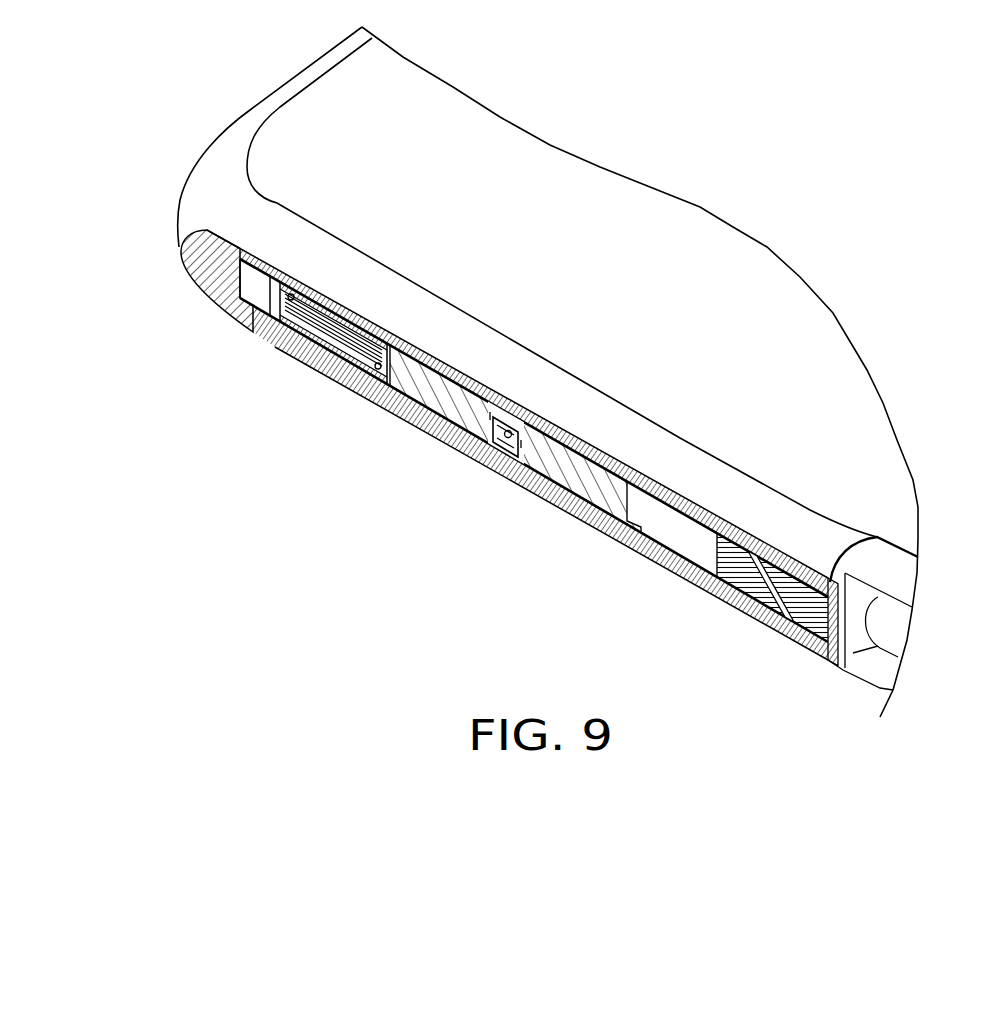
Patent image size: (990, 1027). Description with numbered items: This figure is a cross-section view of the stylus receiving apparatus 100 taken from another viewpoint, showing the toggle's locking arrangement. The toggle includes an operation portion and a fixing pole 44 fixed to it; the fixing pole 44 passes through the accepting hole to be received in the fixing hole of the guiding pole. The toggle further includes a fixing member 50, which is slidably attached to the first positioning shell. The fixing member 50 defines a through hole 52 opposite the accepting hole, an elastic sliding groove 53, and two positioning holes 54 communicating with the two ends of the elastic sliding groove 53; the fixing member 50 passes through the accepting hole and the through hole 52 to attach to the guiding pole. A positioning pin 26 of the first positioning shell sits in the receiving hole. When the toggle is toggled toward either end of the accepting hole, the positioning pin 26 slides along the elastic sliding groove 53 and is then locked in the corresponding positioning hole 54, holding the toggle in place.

The electronic device 100 is at (771, 127).
The fixing member 50 is at (417, 420).
The fixing pole 44 is at (490, 467).
The positioning hole 54 is at (277, 333).
The elastic sliding groove 53 is at (315, 358).
The positioning pin 26 is at (360, 392).
The through hole 52 is at (484, 462).